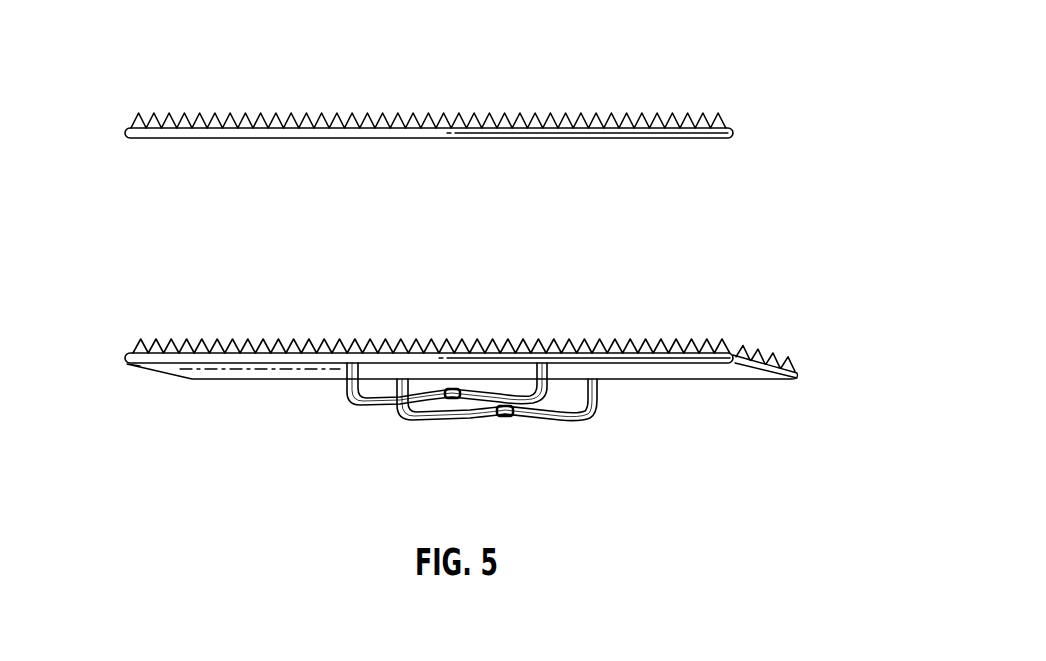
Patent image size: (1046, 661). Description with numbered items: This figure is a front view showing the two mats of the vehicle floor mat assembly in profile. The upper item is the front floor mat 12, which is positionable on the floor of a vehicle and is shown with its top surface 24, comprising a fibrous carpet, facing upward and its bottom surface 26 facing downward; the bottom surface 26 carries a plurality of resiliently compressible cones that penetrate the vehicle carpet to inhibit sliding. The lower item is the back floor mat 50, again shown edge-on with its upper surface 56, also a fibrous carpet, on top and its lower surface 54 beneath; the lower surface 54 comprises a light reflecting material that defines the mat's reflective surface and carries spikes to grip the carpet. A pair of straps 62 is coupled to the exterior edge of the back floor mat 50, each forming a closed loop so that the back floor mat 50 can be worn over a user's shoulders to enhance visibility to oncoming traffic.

The front floor mat 12 is at (488, 130).
The top surface 24 is at (625, 122).
The bottom surface 26 is at (653, 138).
The back floor mat 50 is at (430, 379).
The lower surface 54 is at (282, 372).
The upper surface 56 is at (267, 348).
The straps 62 is at (430, 422).